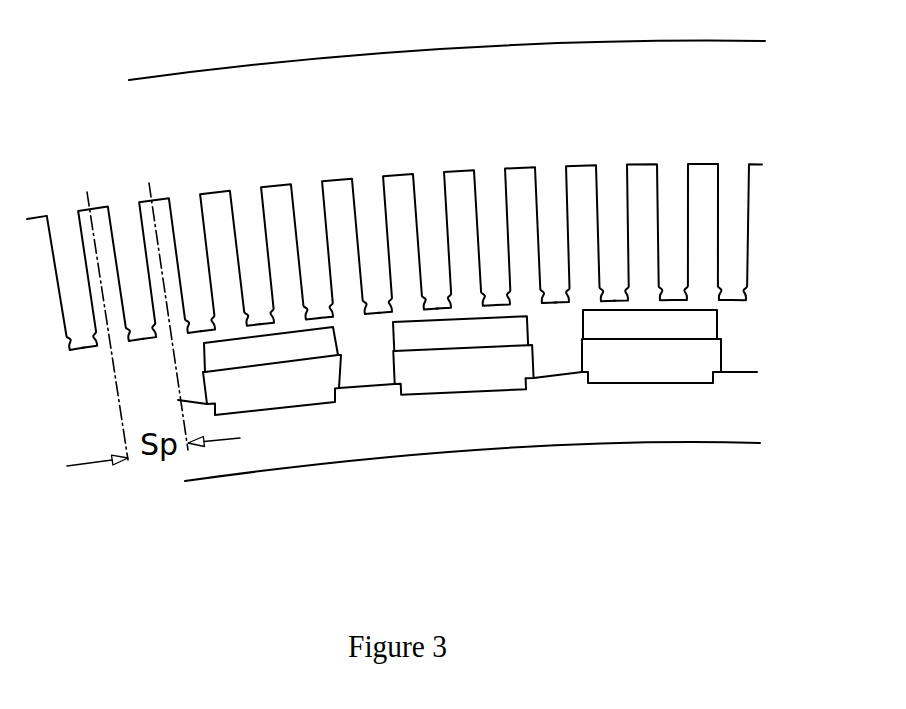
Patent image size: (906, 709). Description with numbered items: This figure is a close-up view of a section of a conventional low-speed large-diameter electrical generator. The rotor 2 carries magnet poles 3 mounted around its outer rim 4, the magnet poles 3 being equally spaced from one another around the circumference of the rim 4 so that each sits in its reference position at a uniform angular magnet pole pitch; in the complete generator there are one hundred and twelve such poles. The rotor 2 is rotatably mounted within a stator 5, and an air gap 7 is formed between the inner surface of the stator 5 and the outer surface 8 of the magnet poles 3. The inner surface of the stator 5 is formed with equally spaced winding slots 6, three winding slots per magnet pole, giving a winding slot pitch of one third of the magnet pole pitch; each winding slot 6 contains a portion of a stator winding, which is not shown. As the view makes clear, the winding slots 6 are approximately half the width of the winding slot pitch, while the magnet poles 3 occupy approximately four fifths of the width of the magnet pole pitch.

The stator yoke 2 is at (480, 413).
The pole block 3 is at (296, 387).
The yoke surface between blocks 4 is at (365, 385).
The rotor back iron 5 is at (539, 93).
The stator slots 6 is at (461, 192).
The air gap 7 is at (673, 305).
The pole block 8 is at (650, 331).